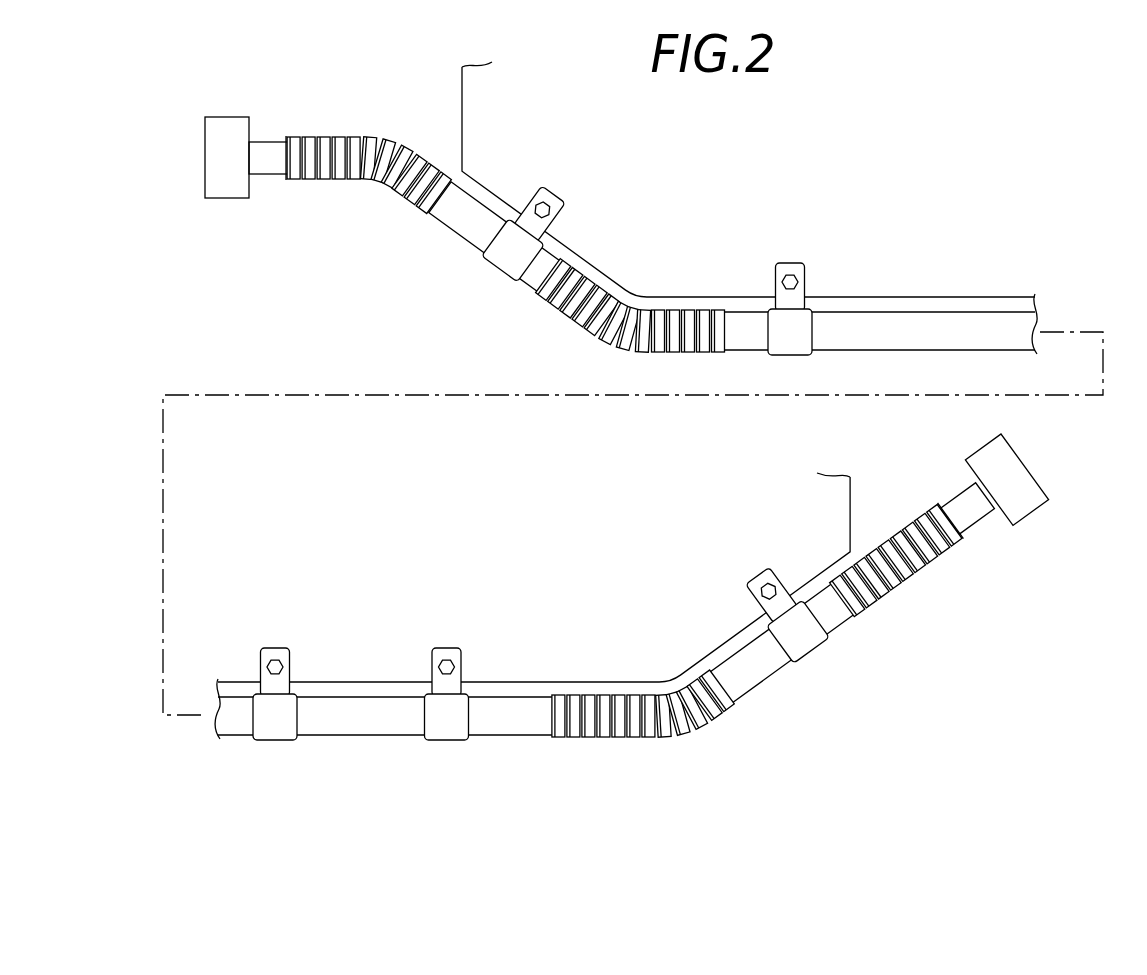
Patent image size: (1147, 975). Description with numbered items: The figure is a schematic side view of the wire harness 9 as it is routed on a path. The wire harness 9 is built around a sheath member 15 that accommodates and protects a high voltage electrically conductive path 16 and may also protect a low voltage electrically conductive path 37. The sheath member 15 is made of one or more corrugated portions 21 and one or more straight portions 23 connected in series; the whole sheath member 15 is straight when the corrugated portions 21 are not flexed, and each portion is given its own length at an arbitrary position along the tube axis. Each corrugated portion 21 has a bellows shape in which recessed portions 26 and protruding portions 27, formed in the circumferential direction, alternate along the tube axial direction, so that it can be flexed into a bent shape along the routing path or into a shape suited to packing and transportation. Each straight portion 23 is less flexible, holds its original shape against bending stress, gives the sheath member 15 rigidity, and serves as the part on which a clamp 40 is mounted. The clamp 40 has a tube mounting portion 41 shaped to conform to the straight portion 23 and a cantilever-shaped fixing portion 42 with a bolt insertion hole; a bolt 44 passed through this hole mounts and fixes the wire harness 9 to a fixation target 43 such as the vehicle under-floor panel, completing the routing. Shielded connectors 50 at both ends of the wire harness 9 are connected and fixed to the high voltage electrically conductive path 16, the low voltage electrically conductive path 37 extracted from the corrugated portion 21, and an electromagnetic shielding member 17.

The wire harness 9 is at (642, 440).
The sheath member 15 is at (637, 502).
The high voltage electrically conductive path 16 is at (601, 281).
The electromagnetic shielding member 17 is at (268, 142).
The corrugated portion 21 is at (642, 440).
The straight portion 23 is at (450, 225).
The recessed portion 26 is at (287, 177).
The protruding portion 27 is at (292, 177).
The low voltage electrically conductive path 37 is at (601, 281).
The clamp 40 is at (586, 475).
The tube mounting portion 41 is at (803, 325).
The fixing portion 42 is at (589, 469).
The fixation target 43 is at (465, 146).
The bolt 44 is at (545, 195).
The shielded connector 50 is at (212, 172).